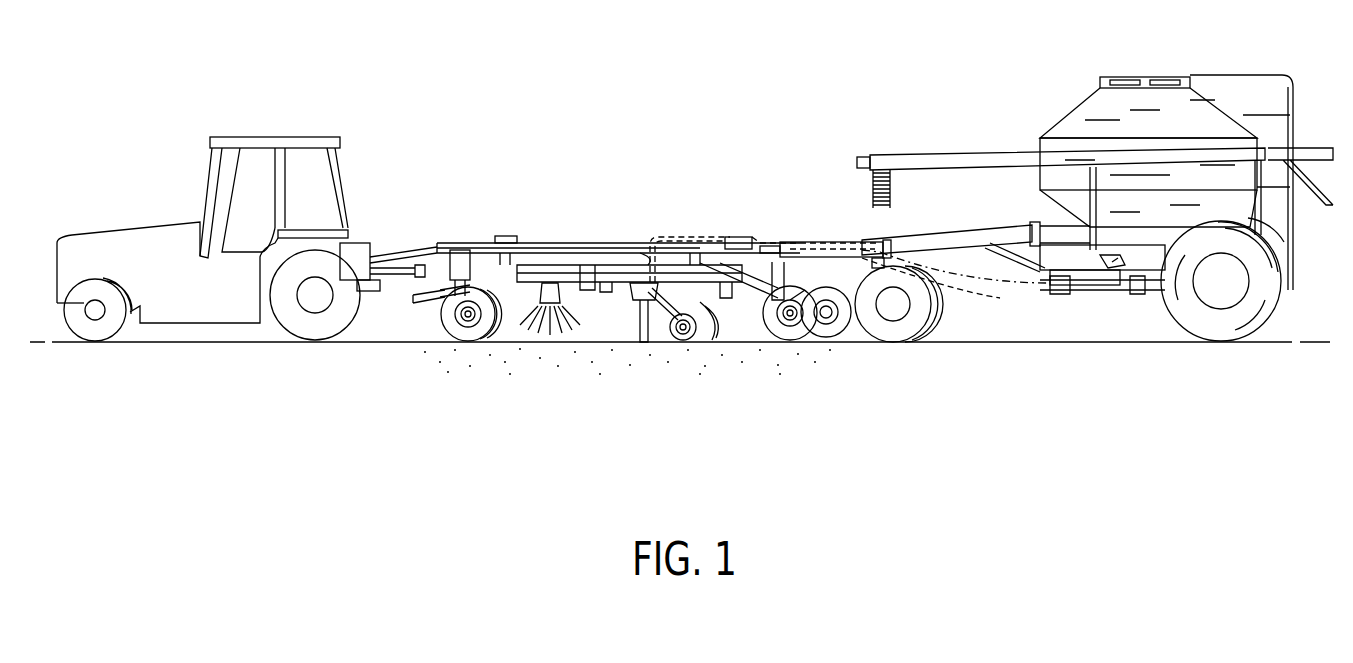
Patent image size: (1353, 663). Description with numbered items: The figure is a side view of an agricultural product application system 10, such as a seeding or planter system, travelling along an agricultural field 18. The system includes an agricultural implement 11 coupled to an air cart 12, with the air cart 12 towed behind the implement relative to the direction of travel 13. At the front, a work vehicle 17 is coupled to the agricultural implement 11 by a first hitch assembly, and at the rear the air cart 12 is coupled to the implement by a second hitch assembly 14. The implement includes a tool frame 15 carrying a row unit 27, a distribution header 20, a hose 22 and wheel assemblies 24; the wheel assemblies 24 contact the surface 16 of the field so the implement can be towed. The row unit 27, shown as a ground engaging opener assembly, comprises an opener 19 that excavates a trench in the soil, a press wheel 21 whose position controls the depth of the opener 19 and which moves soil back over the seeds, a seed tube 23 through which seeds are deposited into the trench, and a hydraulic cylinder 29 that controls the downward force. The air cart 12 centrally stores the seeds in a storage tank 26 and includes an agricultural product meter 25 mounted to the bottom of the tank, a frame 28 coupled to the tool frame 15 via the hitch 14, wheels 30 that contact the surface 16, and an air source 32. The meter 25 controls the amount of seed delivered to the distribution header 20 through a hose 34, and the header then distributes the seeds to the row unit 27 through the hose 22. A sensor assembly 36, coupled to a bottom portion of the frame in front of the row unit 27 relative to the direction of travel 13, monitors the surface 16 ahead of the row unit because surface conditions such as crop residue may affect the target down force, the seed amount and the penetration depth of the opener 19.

The agricultural product application system 10 is at (612, 190).
The agricultural implement 11 is at (527, 240).
The air cart 12 is at (1064, 68).
The direction of travel 13 is at (718, 138).
The second hitch assembly 14 is at (772, 245).
The tool frame 15 is at (635, 245).
The surface 16 is at (1065, 343).
The work vehicle 17 is at (266, 112).
The agricultural field 18 is at (901, 454).
The opener 19 is at (644, 359).
The distribution header 20 is at (742, 237).
The press wheel 21 is at (700, 343).
The hose 22 is at (688, 237).
The seed tube 23 is at (673, 343).
The wheel assemblies 24 is at (460, 343).
The agricultural product meter 25 is at (1117, 272).
The storage tank 26 is at (1095, 112).
The row unit 27 is at (616, 325).
The frame 28 is at (944, 235).
The hydraulic cylinder 29 is at (640, 320).
The wheels 30 is at (945, 318).
The air source 32 is at (1272, 230).
The hose 34 is at (997, 300).
The sensor assembly 36 is at (522, 343).